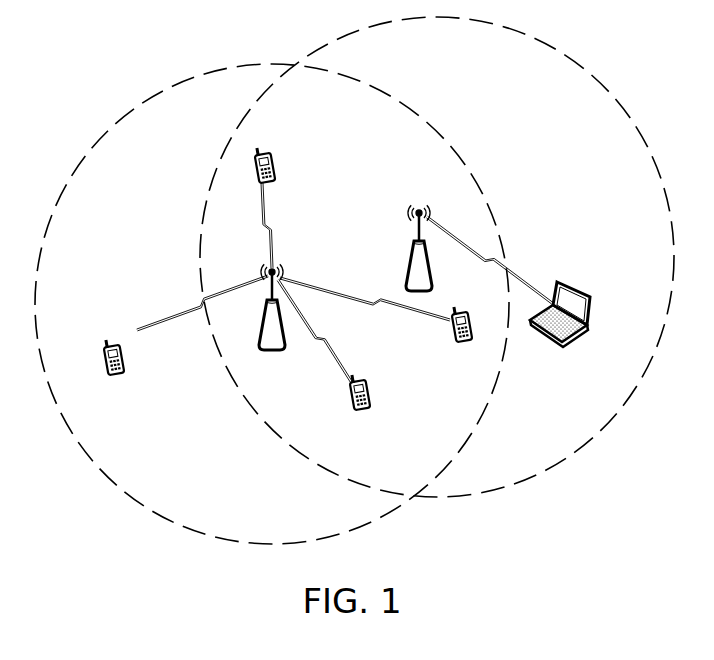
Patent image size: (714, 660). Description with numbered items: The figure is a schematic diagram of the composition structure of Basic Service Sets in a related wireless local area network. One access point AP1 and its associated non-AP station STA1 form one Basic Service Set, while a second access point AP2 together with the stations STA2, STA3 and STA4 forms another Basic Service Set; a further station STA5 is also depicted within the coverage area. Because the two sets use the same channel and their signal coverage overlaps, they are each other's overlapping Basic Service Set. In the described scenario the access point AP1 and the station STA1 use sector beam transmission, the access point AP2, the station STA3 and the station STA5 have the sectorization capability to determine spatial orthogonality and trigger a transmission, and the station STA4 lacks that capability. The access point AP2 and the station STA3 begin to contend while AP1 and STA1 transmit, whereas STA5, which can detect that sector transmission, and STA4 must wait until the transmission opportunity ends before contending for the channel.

The access point AP1 is at (395, 248).
The access point AP2 is at (272, 321).
The station STA1 is at (562, 327).
The station STA2 is at (114, 370).
The station STA3 is at (364, 405).
The station STA4 is at (293, 164).
The station STA5 is at (460, 336).